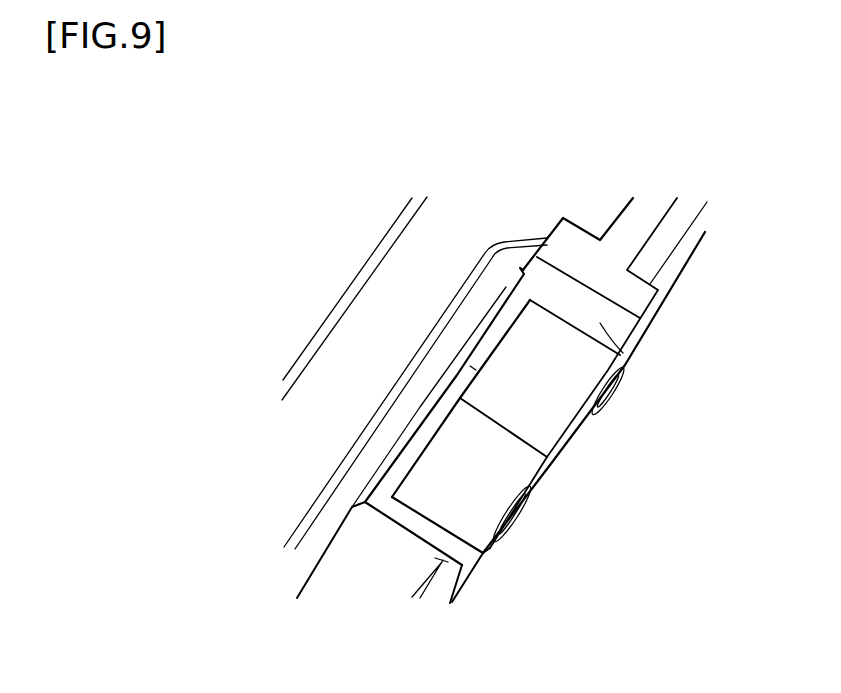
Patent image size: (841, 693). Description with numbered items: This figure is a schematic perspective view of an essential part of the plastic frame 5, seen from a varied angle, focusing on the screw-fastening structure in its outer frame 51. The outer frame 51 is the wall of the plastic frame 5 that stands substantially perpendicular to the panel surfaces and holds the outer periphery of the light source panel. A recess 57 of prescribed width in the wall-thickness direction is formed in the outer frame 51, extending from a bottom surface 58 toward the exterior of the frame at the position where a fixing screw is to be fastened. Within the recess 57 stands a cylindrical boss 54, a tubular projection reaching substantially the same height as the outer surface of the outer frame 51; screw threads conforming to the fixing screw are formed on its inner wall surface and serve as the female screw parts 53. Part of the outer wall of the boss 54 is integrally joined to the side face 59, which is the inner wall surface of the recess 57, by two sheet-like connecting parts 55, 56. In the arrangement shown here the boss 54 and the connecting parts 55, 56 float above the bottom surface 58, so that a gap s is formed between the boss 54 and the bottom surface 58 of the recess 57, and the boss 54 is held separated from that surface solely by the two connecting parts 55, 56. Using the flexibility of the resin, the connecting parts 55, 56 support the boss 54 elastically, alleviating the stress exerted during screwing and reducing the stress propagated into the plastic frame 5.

The plastic frame 5 is at (680, 270).
The outer frame 51 is at (348, 545).
The female screw parts 53 is at (525, 502).
The boss 54 is at (492, 493).
The connecting part 55 is at (470, 568).
The connecting part 56 is at (568, 412).
The recess 57 is at (496, 346).
The bottom surface 58 is at (398, 443).
The side face 59 is at (627, 367).
The gap s is at (473, 368).